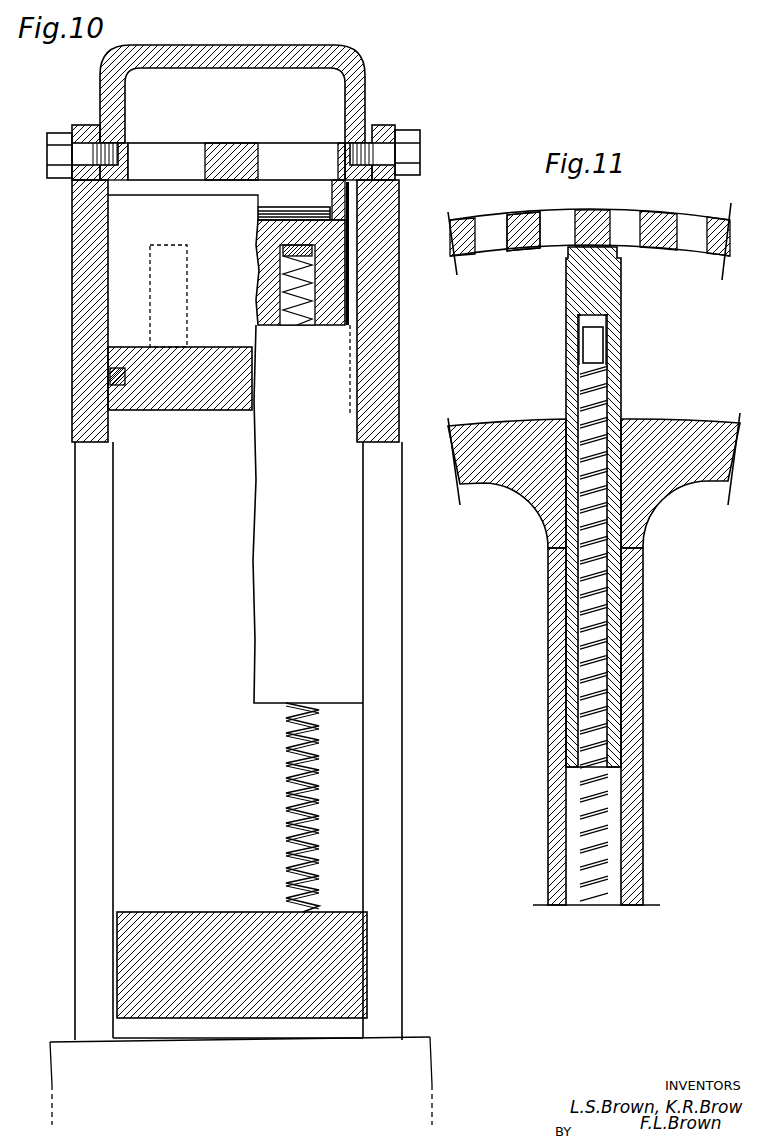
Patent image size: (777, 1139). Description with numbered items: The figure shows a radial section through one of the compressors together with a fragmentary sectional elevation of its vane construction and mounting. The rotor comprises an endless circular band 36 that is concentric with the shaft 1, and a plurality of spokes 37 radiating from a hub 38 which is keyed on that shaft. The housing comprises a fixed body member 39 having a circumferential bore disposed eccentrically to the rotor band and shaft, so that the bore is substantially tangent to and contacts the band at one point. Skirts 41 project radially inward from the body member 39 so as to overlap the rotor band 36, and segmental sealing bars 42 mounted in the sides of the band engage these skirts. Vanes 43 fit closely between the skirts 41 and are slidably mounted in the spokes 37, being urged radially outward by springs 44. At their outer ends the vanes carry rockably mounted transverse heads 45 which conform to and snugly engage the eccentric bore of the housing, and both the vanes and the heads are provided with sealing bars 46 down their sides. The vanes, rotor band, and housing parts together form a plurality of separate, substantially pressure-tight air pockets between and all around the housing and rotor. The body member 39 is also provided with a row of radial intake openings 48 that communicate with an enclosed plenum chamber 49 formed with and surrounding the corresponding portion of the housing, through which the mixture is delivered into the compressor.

In FIG. 10, the shaft 1 is at (415, 1075).
In FIG. 10, the endless circular band 36 is at (185, 406).
In FIG. 11, the endless circular band 36 is at (702, 438).
In FIG. 10, the spokes 37 is at (135, 612).
In FIG. 11, the spokes 37 is at (634, 605).
In FIG. 10, the hub 38 is at (165, 940).
In FIG. 10, the fixed body member 39 is at (228, 170).
In FIG. 11, the fixed body member 39 is at (523, 242).
In FIG. 10, the skirts 41 is at (93, 316).
In FIG. 10, the segmental sealing bars 42 is at (112, 378).
In FIG. 10, the vanes 43 is at (336, 441).
In FIG. 11, the vanes 43 is at (622, 348).
In FIG. 10, the springs 44 is at (296, 326).
In FIG. 11, the springs 44 is at (612, 788).
In FIG. 10, the transverse heads 45 is at (280, 206).
In FIG. 11, the transverse heads 45 is at (620, 286).
In FIG. 10, the sealing bars 46 is at (393, 252).
In FIG. 10, the radial intake openings 48 is at (236, 172).
In FIG. 11, the radial intake openings 48 is at (589, 235).
In FIG. 10, the plenum chamber 49 is at (333, 92).